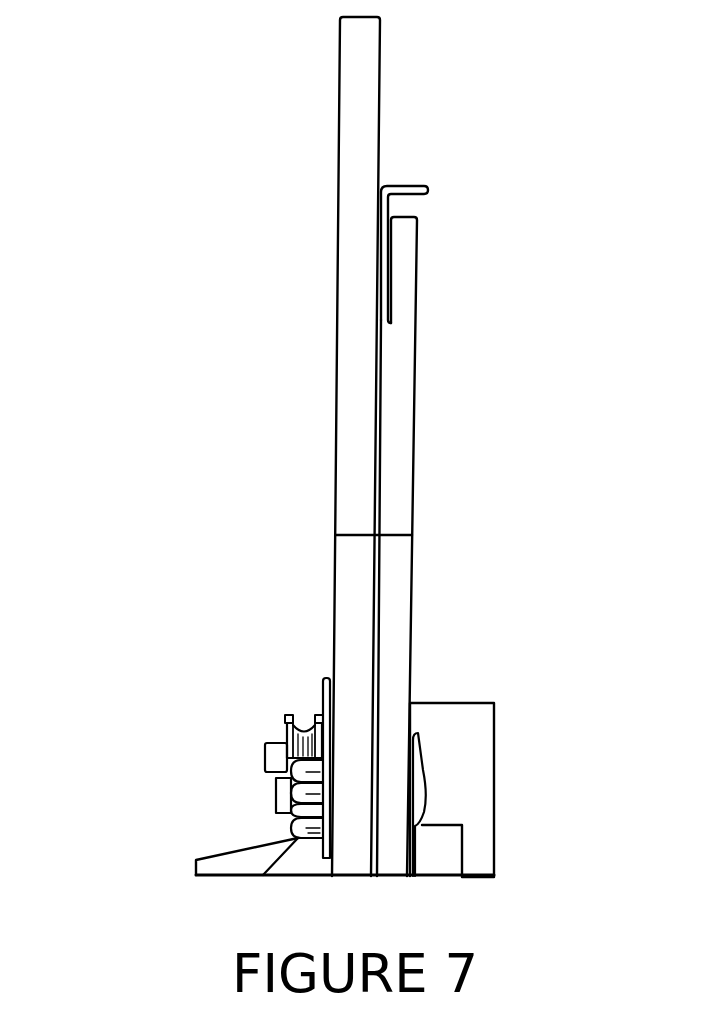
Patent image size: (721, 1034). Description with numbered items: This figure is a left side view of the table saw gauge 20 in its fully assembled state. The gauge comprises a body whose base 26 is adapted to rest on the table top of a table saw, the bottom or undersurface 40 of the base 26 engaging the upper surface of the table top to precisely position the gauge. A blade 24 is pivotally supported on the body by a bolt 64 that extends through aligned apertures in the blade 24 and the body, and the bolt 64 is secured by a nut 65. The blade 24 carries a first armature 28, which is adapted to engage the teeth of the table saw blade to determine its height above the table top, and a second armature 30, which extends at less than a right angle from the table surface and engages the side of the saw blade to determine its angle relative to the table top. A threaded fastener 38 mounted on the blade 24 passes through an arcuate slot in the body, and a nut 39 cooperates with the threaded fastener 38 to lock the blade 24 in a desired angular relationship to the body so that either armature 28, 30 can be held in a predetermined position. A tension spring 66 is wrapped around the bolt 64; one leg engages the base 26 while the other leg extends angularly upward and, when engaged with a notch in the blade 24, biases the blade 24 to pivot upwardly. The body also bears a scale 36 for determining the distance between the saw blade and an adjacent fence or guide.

The table saw gauge 20 is at (337, 180).
The tension spring 66 is at (388, 186).
The blade 24 is at (413, 420).
The second armature 30 is at (392, 613).
The first armature 28 is at (497, 762).
The bolt 64 is at (427, 797).
The undersurface 40 is at (443, 880).
The nut 39 is at (287, 715).
The threaded fastener 38 is at (265, 747).
The scale 36 is at (260, 847).
The base 26 is at (245, 846).
The nut 65 is at (263, 875).